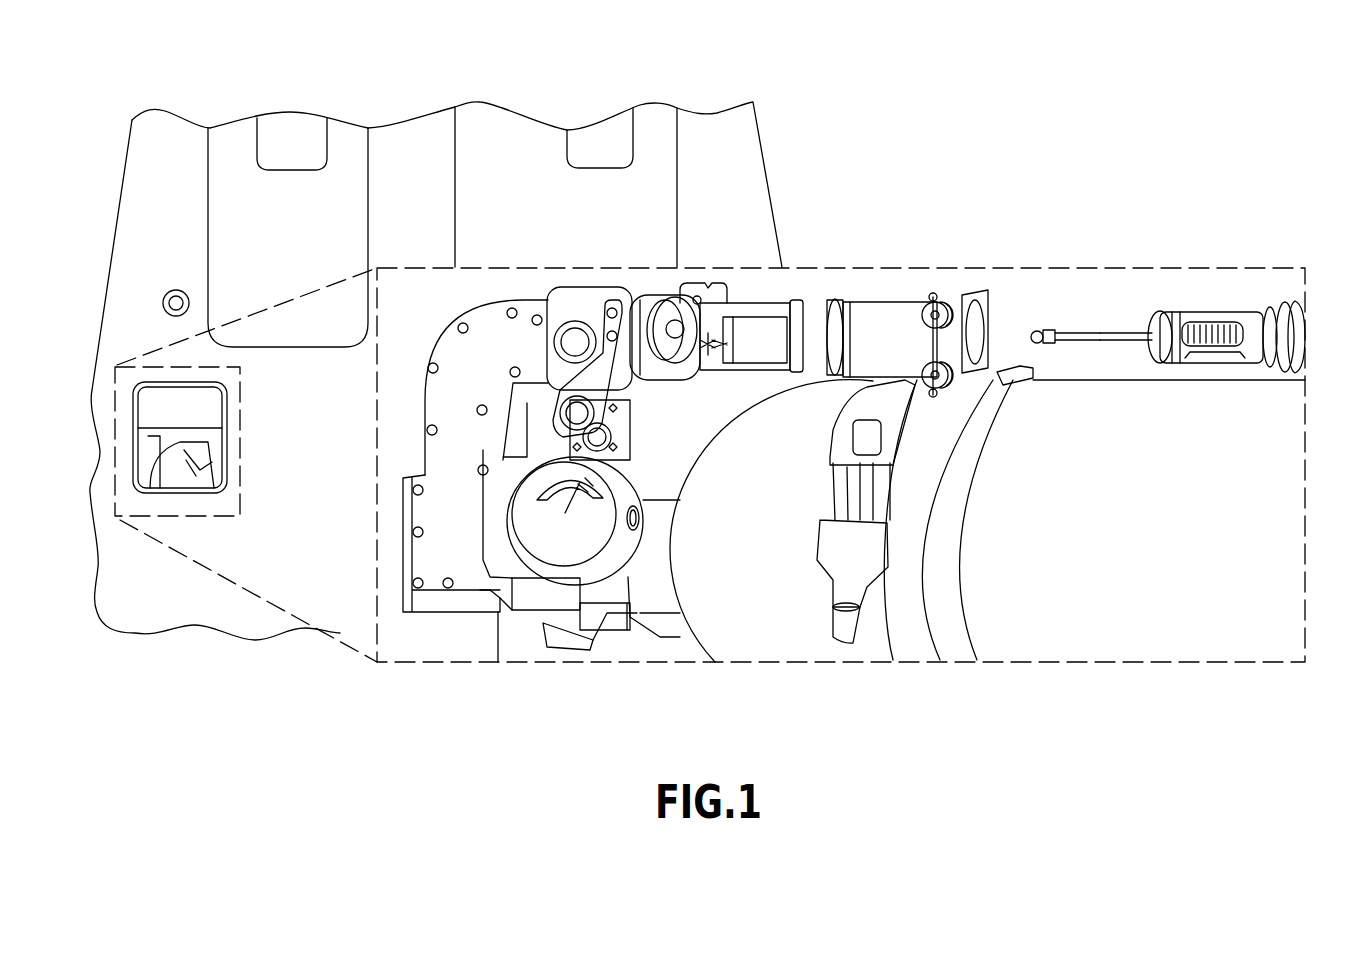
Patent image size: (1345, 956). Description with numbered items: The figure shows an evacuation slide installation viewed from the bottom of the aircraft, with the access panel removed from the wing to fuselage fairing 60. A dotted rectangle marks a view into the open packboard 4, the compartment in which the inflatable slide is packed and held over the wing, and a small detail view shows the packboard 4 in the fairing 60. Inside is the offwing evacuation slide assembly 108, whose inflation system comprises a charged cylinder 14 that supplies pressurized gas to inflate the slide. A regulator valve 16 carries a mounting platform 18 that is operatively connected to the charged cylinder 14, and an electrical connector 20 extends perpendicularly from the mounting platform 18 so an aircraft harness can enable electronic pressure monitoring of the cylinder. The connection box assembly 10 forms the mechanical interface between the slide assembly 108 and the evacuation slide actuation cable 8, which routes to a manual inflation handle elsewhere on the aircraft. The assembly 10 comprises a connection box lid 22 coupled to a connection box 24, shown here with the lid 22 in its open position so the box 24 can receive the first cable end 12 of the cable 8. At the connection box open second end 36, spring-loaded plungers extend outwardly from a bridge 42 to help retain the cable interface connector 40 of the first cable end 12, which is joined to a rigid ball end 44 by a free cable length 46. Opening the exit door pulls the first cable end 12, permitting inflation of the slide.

The packboard 4 is at (193, 467).
The evacuation slide actuation cable 8 is at (1175, 273).
The connection box assembly 10 is at (783, 280).
The first cable end 12 is at (1227, 298).
The charged cylinder 14 is at (812, 632).
The regulator valve 16 is at (602, 593).
The mounting platform 18 is at (630, 452).
The electrical connector 20 is at (632, 423).
The connection box lid 22 is at (603, 290).
The connection box 24 is at (890, 317).
The connection box open second end 36 is at (990, 318).
The cable interface connector 40 is at (1263, 317).
The bridge 42 is at (962, 292).
The rigid ball end 44 is at (1040, 332).
The free cable length 46 is at (1105, 333).
The aircraft wing to fuselage fairing 60 is at (750, 210).
The evacuation slide assembly 108 is at (995, 686).